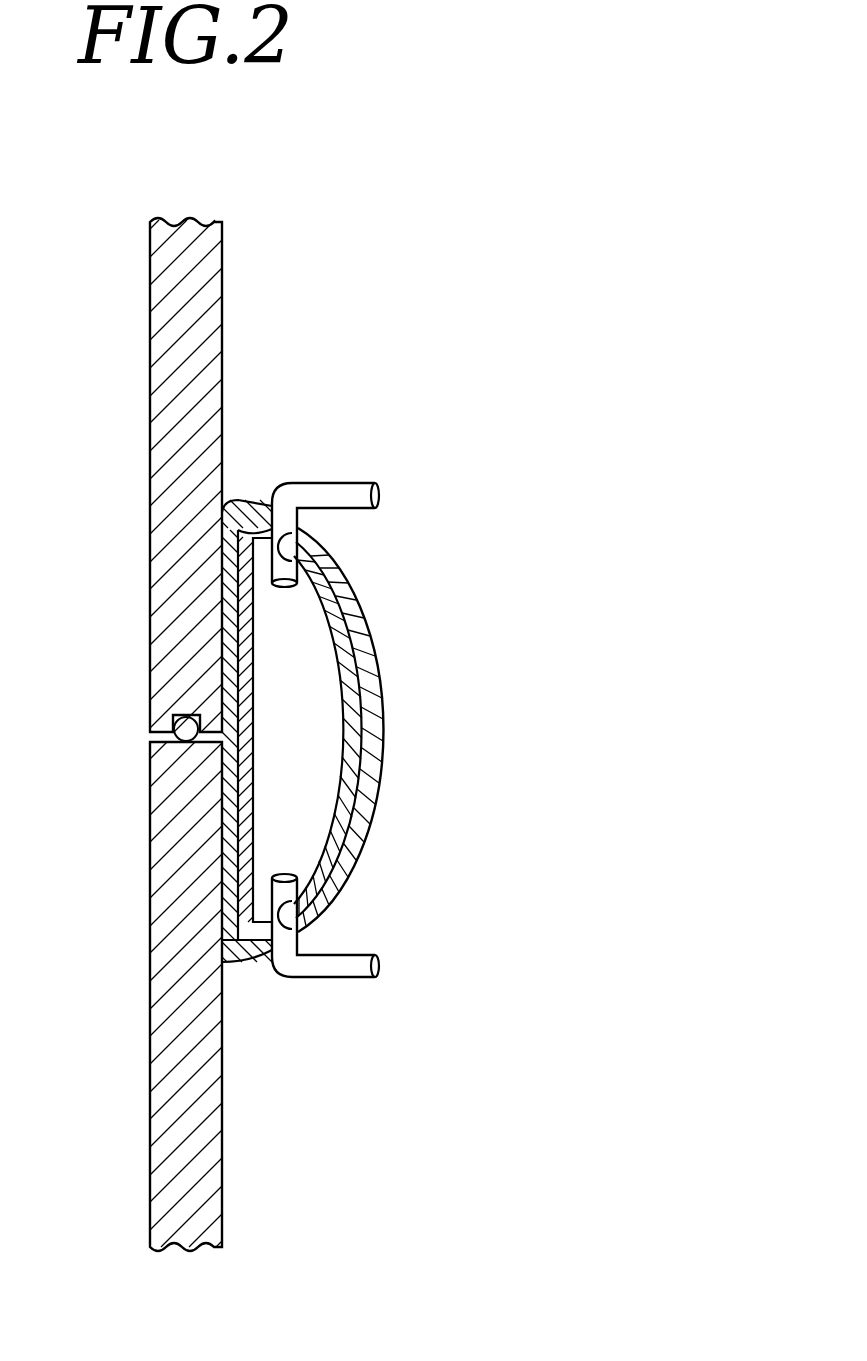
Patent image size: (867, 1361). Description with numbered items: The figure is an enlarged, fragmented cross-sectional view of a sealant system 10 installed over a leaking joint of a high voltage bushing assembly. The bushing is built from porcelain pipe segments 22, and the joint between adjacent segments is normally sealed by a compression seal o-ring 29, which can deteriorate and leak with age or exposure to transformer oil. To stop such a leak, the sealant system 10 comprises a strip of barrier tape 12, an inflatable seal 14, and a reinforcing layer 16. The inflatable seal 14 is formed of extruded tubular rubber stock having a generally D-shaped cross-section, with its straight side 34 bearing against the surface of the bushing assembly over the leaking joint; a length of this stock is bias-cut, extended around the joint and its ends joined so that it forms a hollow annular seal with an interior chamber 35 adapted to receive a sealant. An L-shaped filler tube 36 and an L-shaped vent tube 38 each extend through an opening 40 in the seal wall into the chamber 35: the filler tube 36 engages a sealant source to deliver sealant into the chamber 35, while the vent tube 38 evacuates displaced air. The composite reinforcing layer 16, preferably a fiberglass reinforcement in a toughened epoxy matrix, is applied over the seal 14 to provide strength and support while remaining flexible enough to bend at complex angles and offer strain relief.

The sealant system 10 is at (588, 540).
The strip of barrier tape 12 is at (222, 833).
The inflatable seal 14 is at (224, 512).
The reinforcing layer 16 is at (378, 668).
The porcelain pipe segment 22 is at (222, 251).
The compression seal o-ring 29 is at (111, 721).
The straight side 34 is at (222, 928).
The chamber 35 is at (325, 756).
The filler tube 36 is at (340, 980).
The vent tube 38 is at (340, 483).
The opening 40 is at (298, 528).